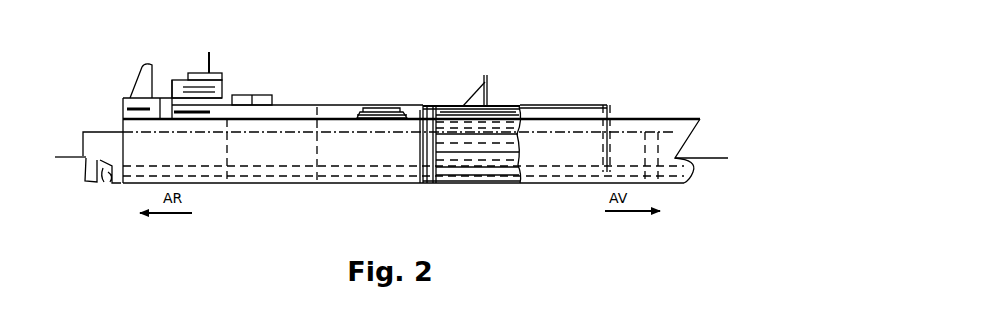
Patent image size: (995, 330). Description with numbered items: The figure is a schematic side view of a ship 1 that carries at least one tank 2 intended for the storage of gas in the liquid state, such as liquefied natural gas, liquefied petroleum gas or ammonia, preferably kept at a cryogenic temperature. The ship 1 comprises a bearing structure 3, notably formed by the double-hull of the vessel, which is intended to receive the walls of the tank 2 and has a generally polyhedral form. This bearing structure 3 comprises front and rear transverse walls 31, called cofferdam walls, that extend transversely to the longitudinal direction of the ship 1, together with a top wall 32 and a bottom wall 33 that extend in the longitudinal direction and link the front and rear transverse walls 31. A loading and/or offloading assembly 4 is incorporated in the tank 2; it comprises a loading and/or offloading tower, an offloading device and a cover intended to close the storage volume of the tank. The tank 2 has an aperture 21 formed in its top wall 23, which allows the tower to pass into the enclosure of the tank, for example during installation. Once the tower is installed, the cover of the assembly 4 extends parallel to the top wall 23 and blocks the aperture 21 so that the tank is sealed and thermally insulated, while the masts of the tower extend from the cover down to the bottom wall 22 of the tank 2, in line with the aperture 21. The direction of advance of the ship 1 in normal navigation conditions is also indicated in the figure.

The ship 1 is at (102, 66).
The tank 2 is at (525, 80).
The bearing structure 3 is at (370, 93).
The loading and/or offloading assembly 4 is at (422, 92).
The aperture 21 is at (492, 92).
The bottom wall of the tank 22 is at (503, 183).
The top wall of the tank 23 is at (517, 100).
The front and rear transverse walls 31 is at (510, 145).
The top wall of the bearing structure 32 is at (459, 97).
The bottom wall of the bearing structure 33 is at (488, 183).